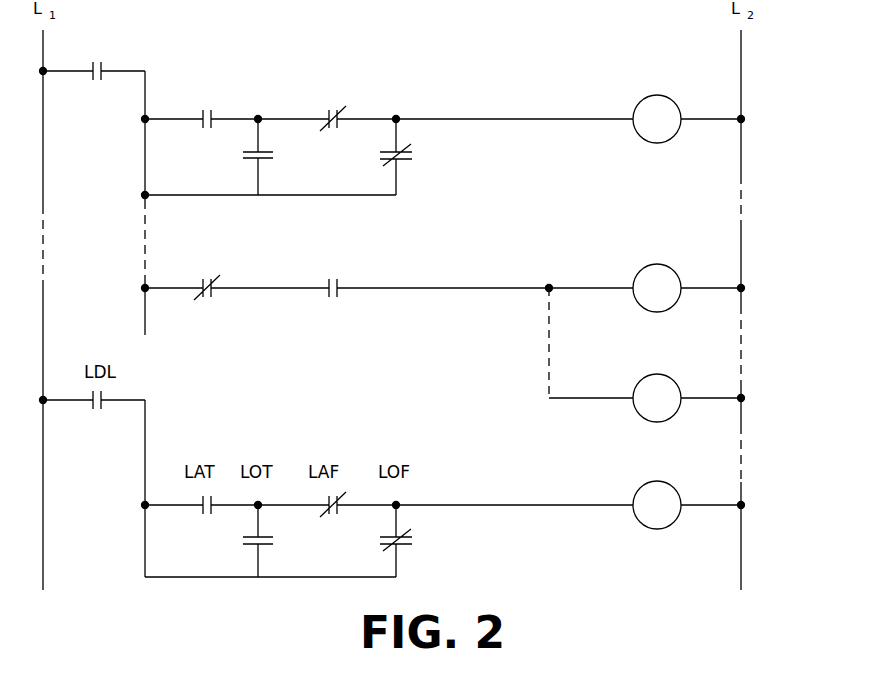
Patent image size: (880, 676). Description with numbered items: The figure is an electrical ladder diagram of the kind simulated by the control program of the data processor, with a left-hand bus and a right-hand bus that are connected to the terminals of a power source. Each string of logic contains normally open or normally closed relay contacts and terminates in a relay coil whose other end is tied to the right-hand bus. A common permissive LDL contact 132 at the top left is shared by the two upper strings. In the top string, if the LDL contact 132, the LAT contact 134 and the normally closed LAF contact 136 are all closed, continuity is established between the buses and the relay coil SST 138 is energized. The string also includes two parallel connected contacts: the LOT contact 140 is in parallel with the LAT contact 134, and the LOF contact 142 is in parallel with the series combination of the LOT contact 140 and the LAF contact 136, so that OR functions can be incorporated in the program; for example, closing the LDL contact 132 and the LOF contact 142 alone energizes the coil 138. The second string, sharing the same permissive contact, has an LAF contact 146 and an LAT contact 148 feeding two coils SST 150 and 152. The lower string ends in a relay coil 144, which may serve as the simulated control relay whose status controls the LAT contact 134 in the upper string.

The LDL contact 132 is at (104, 82).
The LAT contact 134 is at (213, 130).
The LAF contact 136 is at (340, 130).
The relay coil SST 138 is at (663, 143).
The LOT contact 140 is at (275, 157).
The LOF contact 142 is at (413, 156).
The relay coil 144 is at (663, 529).
The LAF contact 146 is at (214, 300).
The LAT contact 148 is at (340, 300).
The relay coil SST 150 is at (671, 324).
The relay coil SST 152 is at (671, 434).